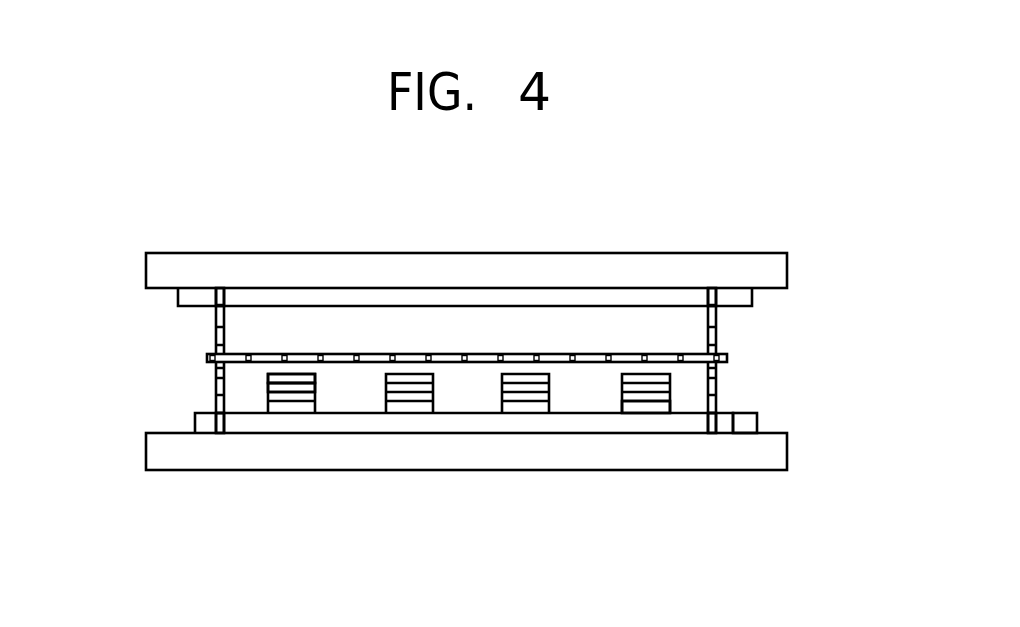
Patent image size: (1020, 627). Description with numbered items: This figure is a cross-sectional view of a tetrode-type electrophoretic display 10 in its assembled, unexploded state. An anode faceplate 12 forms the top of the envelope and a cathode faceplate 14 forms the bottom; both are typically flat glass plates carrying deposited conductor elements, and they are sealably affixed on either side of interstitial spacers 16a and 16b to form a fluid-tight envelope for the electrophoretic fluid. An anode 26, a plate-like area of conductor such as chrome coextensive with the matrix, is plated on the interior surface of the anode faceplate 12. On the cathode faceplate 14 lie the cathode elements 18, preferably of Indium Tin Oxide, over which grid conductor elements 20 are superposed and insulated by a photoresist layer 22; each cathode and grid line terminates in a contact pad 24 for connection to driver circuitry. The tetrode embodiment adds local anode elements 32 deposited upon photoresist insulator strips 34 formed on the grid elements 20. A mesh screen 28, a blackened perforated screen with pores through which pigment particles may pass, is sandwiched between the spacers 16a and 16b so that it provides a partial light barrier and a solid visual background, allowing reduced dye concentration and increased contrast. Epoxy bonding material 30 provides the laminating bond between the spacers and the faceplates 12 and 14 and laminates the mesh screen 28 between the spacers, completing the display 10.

The electrophoretic display 10 is at (228, 507).
The anode faceplate 12 is at (767, 269).
The cathode faceplate 14 is at (770, 457).
The interstitial spacer 16a is at (216, 389).
The interstitial spacer 16b is at (216, 329).
The cathode elements 18 is at (408, 423).
The grid conductor elements 20 is at (625, 397).
The photoresist layer 22 is at (652, 407).
The contact pad 24 is at (748, 422).
The anode 26 is at (668, 299).
The mesh screen 28 is at (408, 350).
The epoxy bonding material 30 is at (213, 303).
The local anode elements 32 is at (292, 378).
The photoresist insulator strips 34 is at (303, 387).